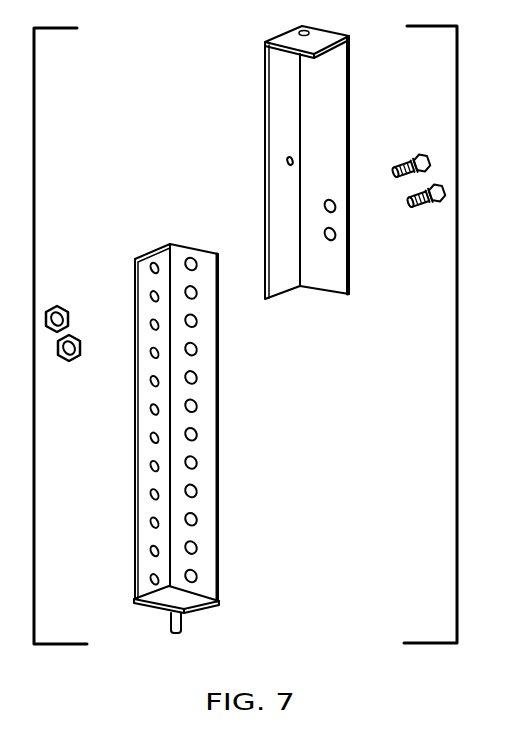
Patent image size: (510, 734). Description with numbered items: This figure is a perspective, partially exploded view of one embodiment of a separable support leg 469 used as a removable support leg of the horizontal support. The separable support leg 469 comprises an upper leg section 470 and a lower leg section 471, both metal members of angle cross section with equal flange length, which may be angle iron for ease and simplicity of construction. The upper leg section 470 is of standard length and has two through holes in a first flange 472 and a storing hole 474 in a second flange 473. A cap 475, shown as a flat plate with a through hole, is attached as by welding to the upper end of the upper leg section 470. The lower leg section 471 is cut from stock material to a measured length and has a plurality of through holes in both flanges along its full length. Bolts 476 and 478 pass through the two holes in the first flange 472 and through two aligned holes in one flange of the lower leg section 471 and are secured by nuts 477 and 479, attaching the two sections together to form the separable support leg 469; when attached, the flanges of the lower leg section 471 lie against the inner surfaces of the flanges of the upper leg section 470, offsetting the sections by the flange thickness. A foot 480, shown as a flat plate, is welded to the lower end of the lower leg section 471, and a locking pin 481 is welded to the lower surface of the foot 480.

The separable support leg 469 is at (315, 407).
The upper leg section 470 is at (303, 162).
The lower leg section 471 is at (188, 445).
The first flange 472 is at (347, 281).
The second flange 473 is at (262, 105).
The storing hole 474 is at (283, 163).
The cap 475 is at (350, 40).
The bolt 476 is at (417, 153).
The nut 477 is at (55, 304).
The bolt 478 is at (433, 205).
The nut 479 is at (67, 361).
The foot 480 is at (220, 602).
The locking pin 481 is at (167, 617).